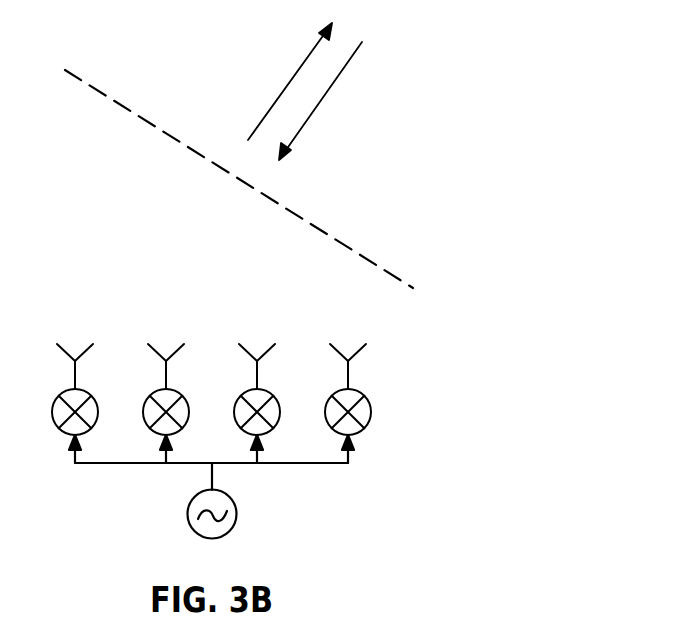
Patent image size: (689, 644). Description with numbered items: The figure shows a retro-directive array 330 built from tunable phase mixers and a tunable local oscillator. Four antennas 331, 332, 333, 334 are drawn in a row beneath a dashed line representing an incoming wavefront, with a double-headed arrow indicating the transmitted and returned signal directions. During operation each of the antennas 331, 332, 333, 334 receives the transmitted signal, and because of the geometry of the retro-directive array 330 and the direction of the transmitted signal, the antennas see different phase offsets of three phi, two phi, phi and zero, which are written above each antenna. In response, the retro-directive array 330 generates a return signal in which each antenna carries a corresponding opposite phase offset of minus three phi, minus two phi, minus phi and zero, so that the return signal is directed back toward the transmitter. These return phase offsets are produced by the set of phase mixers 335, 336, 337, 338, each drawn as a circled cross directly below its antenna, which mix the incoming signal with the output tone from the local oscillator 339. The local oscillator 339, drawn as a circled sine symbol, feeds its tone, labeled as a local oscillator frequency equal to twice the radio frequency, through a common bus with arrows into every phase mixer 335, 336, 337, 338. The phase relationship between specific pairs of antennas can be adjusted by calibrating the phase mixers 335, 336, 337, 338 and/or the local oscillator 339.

The retro-directive array 330 is at (233, 264).
The antenna 331 is at (60, 366).
The antenna 332 is at (151, 366).
The antenna 333 is at (242, 366).
The antenna 334 is at (334, 366).
The phase mixer 335 is at (62, 417).
The phase mixer 336 is at (152, 417).
The phase mixer 337 is at (243, 417).
The phase mixer 338 is at (334, 417).
The local oscillator 339 is at (250, 514).